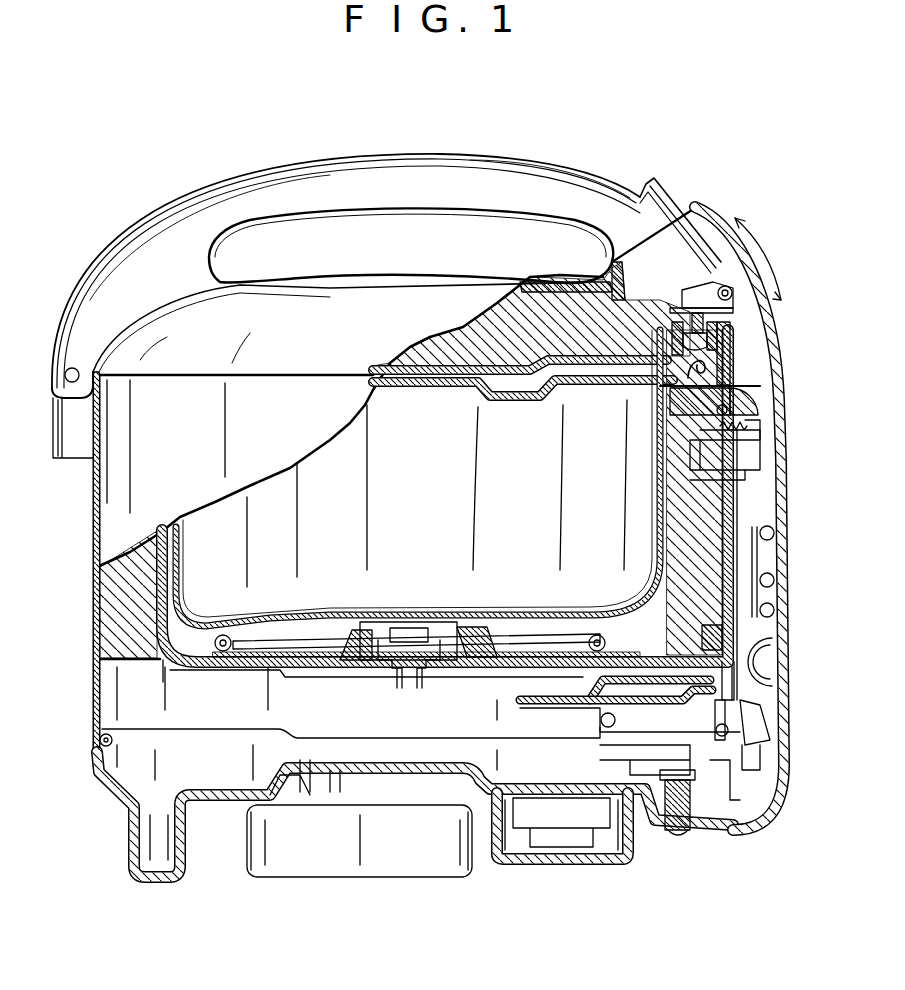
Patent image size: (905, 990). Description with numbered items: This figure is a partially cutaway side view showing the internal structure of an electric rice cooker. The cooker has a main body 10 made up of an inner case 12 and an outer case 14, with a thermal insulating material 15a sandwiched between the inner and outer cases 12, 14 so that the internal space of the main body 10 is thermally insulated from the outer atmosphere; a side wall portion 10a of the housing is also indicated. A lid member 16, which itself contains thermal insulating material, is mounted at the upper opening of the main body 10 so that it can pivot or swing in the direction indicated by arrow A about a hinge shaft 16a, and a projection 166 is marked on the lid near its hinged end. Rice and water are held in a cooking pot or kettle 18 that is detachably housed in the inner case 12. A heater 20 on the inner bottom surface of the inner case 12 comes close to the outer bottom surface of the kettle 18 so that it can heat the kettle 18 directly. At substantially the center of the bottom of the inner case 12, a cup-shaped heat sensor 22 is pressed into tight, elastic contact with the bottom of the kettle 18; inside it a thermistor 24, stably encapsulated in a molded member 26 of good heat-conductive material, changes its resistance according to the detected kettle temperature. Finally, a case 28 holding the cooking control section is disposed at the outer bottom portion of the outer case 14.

The main body 10 is at (90, 517).
The housing side wall 10a is at (780, 497).
The inner case 12 is at (664, 598).
The outer case 14 is at (97, 591).
The thermal insulating material 15a is at (533, 294).
The lid member 16 is at (353, 297).
The hinge shaft 16a is at (75, 366).
The lid projection 166 is at (672, 190).
The cooking pot or kettle 18 is at (650, 530).
The heater 20 is at (597, 636).
The heat sensor 22 is at (357, 622).
The thermistor 24 is at (405, 628).
The molded member 26 is at (440, 627).
The case 28 is at (318, 863).
The arrow A is at (757, 256).